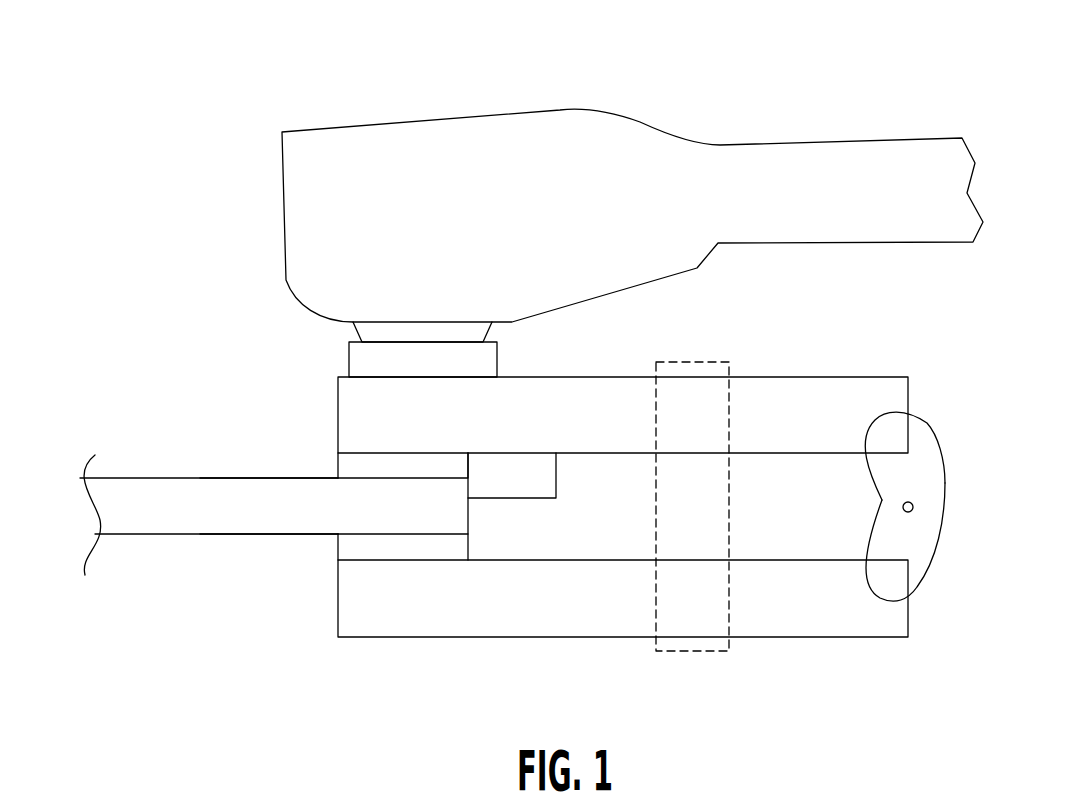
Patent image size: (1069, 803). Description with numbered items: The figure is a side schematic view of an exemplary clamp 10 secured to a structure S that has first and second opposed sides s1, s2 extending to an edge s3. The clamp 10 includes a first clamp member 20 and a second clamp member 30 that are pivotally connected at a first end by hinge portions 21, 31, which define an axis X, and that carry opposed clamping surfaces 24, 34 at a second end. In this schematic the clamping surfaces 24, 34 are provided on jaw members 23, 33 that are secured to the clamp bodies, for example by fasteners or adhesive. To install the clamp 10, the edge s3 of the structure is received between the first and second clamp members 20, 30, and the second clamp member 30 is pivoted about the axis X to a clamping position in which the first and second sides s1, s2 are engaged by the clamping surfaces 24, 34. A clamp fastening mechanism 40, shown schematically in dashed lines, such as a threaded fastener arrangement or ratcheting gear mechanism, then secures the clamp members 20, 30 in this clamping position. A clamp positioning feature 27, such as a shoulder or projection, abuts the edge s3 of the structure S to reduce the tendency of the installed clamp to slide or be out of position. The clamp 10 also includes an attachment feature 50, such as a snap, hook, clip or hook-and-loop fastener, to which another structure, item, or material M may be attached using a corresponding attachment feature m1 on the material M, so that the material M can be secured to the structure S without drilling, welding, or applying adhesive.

The material M is at (557, 143).
The attachment feature m1 is at (360, 335).
The attachment feature 50 is at (362, 360).
The first clamp member 20 is at (566, 354).
The jaw member 23 is at (388, 462).
The first clamping surface 24 is at (407, 478).
The clamp positioning feature 27 is at (528, 480).
The edge s3 is at (468, 518).
The jaw member 33 is at (398, 549).
The second clamping surface 34 is at (416, 533).
The second clamp member 30 is at (805, 658).
The clamp fastening mechanism 40 is at (729, 362).
The hinge portion 21 is at (935, 446).
The hinge portion 31 is at (917, 585).
The axis X is at (913, 505).
The structure S is at (162, 512).
The first side s1 is at (247, 479).
The second side s2 is at (253, 534).
The clamp 10 is at (940, 688).